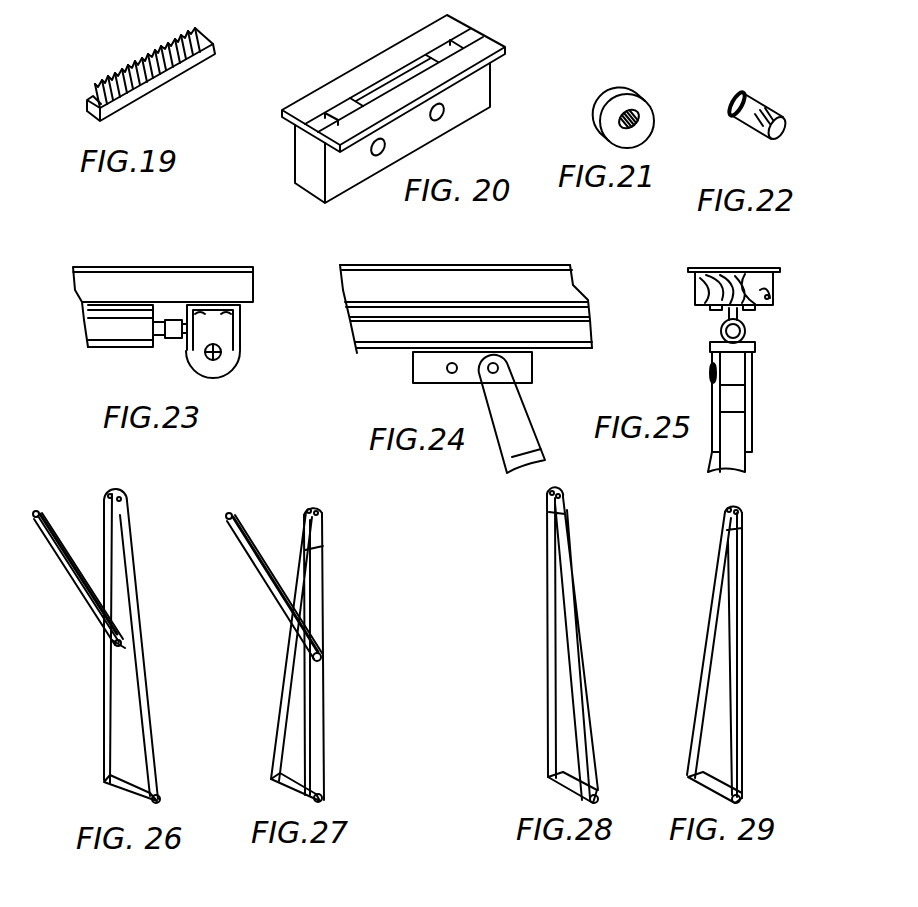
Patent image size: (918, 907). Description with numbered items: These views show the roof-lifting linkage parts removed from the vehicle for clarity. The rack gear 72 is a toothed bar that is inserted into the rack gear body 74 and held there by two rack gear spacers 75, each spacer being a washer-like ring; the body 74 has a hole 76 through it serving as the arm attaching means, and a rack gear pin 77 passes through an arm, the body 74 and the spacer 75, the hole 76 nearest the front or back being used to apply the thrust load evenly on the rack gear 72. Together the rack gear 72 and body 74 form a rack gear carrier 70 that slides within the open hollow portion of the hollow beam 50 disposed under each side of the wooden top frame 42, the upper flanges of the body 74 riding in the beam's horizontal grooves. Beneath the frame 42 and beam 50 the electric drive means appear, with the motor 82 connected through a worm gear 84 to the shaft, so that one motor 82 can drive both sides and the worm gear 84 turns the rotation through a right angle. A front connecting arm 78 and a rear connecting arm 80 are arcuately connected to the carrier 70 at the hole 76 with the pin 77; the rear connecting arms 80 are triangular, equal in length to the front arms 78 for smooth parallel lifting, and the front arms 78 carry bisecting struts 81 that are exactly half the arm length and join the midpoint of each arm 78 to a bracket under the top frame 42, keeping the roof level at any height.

In FIG. 19, the rack gear 72 is at (147, 52).
In FIG. 20, the rack gear body 74 is at (382, 52).
In FIG. 20, the hole 76 is at (372, 150).
In FIG. 21, the rack gear spacer 75 is at (648, 90).
In FIG. 22, the rack gear pin 77 is at (760, 98).
In FIG. 23, the top frame 42 is at (151, 268).
In FIG. 24, the top frame 42 is at (503, 268).
In FIG. 25, the top frame 42 is at (710, 272).
In FIG. 23, the hollow beam 50 is at (98, 350).
In FIG. 24, the hollow beam 50 is at (373, 353).
In FIG. 23, the worm gear 84 is at (242, 327).
In FIG. 23, the electric motor 82 is at (222, 372).
In FIG. 24, the rack gear carrier 70 is at (535, 370).
In FIG. 25, the rack gear carrier 70 is at (735, 372).
In FIG. 24, the rear connecting arm 80 is at (500, 452).
In FIG. 25, the rear connecting arm 80 is at (745, 457).
In FIG. 28, the rear connecting arm 80 is at (547, 605).
In FIG. 29, the rear connecting arm 80 is at (708, 600).
In FIG. 26, the bisecting strut 81 is at (60, 527).
In FIG. 27, the bisecting strut 81 is at (253, 530).
In FIG. 26, the front connecting arm 78 is at (103, 707).
In FIG. 27, the front connecting arm 78 is at (323, 707).